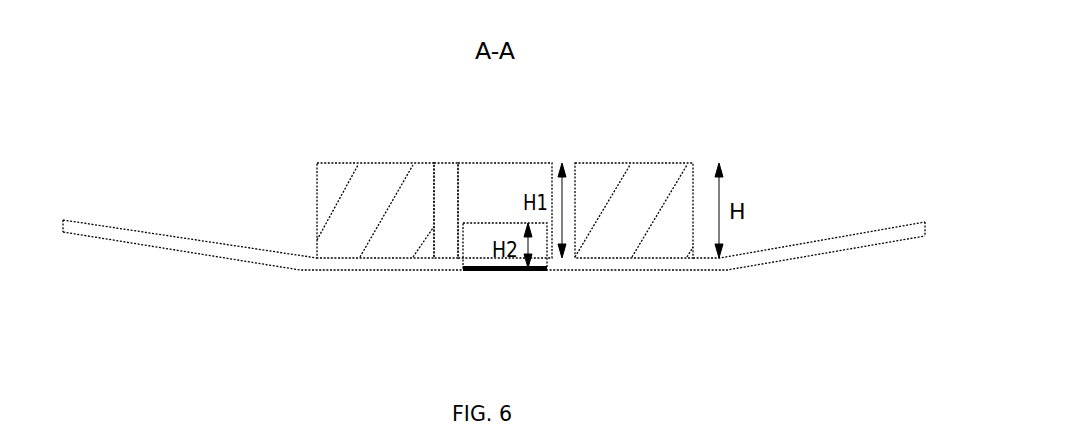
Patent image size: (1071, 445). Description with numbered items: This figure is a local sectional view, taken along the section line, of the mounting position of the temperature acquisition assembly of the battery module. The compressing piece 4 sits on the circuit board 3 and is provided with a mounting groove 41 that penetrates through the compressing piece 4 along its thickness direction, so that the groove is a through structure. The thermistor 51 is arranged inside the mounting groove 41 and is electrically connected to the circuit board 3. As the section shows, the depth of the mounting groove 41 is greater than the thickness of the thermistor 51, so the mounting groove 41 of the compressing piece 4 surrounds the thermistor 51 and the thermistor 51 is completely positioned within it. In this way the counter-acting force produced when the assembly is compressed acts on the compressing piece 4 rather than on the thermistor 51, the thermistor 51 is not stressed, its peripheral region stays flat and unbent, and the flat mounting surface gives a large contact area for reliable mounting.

The circuit board 3 is at (392, 262).
The compressing piece 4 is at (637, 188).
The mounting groove 41 is at (497, 188).
The thermistor 51 is at (477, 260).